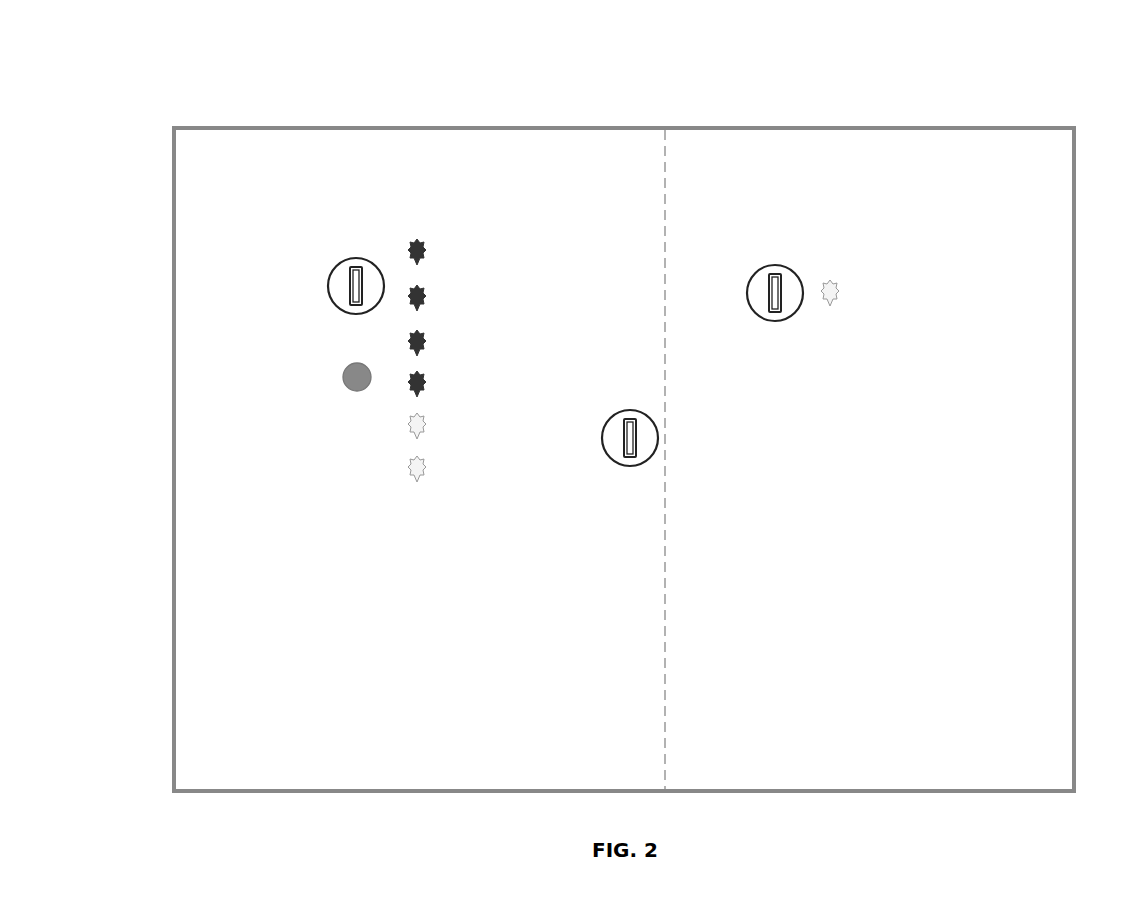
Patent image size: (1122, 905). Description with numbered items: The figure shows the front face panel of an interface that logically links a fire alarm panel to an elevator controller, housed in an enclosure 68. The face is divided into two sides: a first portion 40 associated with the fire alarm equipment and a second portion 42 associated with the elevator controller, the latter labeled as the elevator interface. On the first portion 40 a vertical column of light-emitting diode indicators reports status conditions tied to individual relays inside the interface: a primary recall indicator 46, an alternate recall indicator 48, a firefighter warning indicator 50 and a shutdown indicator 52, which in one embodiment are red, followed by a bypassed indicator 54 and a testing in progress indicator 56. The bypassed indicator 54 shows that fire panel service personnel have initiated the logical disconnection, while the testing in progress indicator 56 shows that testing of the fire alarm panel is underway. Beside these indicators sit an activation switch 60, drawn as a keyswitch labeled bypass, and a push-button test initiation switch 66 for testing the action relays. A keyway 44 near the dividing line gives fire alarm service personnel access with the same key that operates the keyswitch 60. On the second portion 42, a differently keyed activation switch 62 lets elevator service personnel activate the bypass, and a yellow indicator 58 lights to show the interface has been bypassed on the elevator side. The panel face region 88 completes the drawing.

The first portion 40 is at (341, 108).
The second portion 42 is at (884, 108).
The keyway 44 is at (648, 446).
The primary recall indicator 46 is at (423, 248).
The alternate recall indicator 48 is at (423, 293).
The firefighter warning indicator 50 is at (423, 338).
The shutdown indicator 52 is at (420, 375).
The bypassed indicator 54 is at (408, 425).
The testing in progress indicator 56 is at (408, 475).
The indicator 58 is at (838, 288).
The activation switch 60 is at (338, 284).
The activation switch 62 is at (760, 284).
The test initiation switch 66 is at (355, 376).
The enclosure 68 is at (172, 784).
The panel face 88 is at (493, 680).